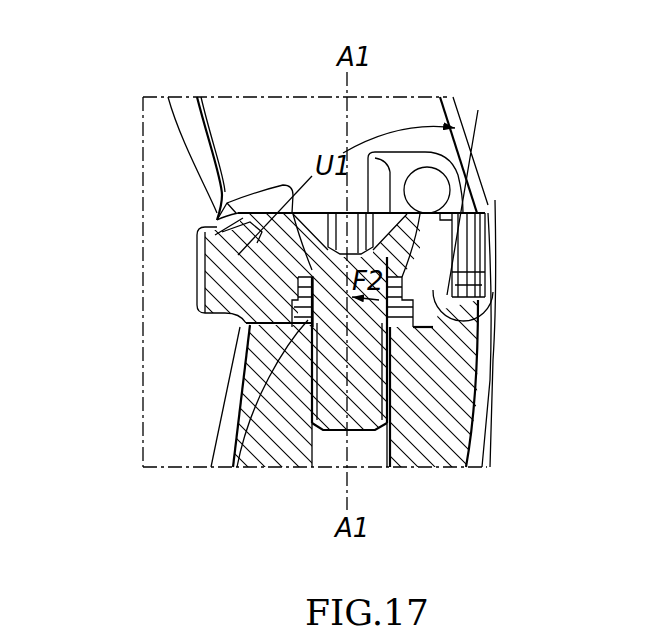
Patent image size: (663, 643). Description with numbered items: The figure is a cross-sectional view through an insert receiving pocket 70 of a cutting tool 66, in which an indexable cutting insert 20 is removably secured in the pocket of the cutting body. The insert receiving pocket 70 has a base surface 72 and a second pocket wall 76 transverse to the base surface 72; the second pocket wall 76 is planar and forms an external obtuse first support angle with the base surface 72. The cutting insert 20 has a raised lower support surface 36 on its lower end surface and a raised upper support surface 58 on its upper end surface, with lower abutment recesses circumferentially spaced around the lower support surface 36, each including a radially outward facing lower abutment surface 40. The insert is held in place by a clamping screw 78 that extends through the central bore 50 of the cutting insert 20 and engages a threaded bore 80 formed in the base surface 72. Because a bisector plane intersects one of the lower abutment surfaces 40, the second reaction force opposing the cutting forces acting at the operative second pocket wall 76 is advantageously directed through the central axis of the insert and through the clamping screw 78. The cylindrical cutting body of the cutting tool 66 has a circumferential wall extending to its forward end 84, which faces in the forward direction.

The indexable cutting insert 20 is at (234, 270).
The lower support surface 36 is at (438, 340).
The lower abutment surface 40 is at (488, 332).
The central bore 50 is at (240, 467).
The upper support surface 58 is at (262, 314).
The cutting tool 66 is at (126, 137).
The insert receiving pocket 70 is at (250, 188).
The base surface 72 is at (302, 308).
The second pocket wall 76 is at (460, 280).
The clamping screw 78 is at (338, 404).
The threaded bore 80 is at (371, 455).
The forward end 84 is at (166, 362).